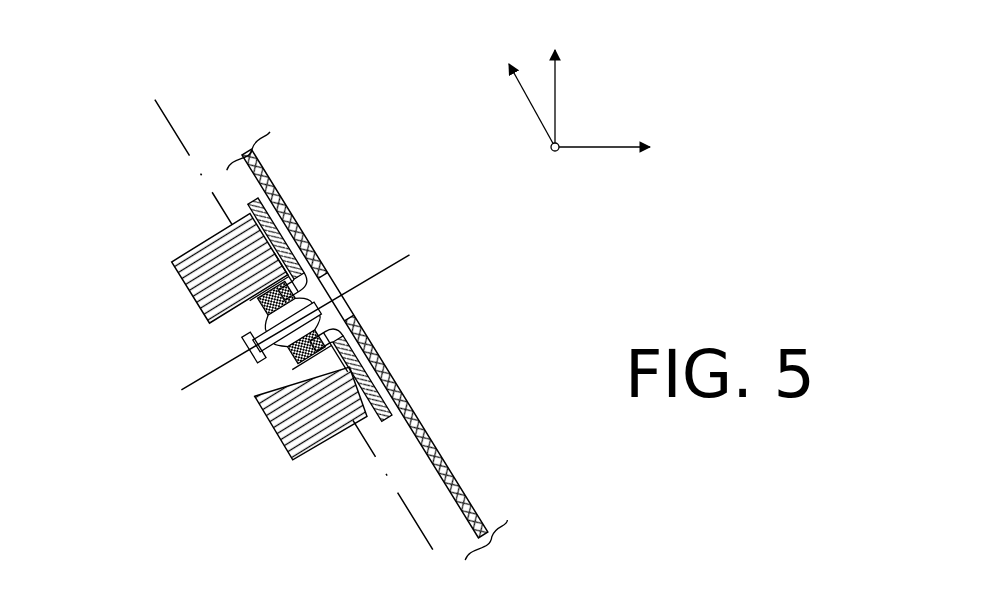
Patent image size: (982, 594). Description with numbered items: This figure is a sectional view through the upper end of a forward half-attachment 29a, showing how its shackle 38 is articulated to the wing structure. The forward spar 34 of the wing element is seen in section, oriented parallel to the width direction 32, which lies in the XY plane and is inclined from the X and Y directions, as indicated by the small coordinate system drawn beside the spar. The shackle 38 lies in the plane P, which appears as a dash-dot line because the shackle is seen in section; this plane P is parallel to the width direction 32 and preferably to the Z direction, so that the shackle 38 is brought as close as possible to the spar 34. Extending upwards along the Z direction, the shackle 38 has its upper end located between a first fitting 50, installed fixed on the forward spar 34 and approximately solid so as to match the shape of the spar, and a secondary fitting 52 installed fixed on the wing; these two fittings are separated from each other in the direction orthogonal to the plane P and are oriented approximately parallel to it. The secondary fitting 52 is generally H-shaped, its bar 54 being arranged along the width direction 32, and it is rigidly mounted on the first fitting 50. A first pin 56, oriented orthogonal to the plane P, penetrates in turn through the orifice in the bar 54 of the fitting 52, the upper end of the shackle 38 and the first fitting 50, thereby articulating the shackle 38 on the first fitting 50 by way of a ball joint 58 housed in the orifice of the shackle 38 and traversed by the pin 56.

The plane P is at (162, 115).
The forward spar 34 is at (437, 453).
The first pin 56 is at (325, 277).
The shackle 38 is at (298, 275).
The first fitting 50 is at (388, 373).
The secondary fitting 52 is at (246, 315).
The ball joint 58 is at (281, 443).
The bar 54 is at (280, 366).
The forward half-attachment 29a is at (252, 422).
The width direction 32 is at (528, 105).